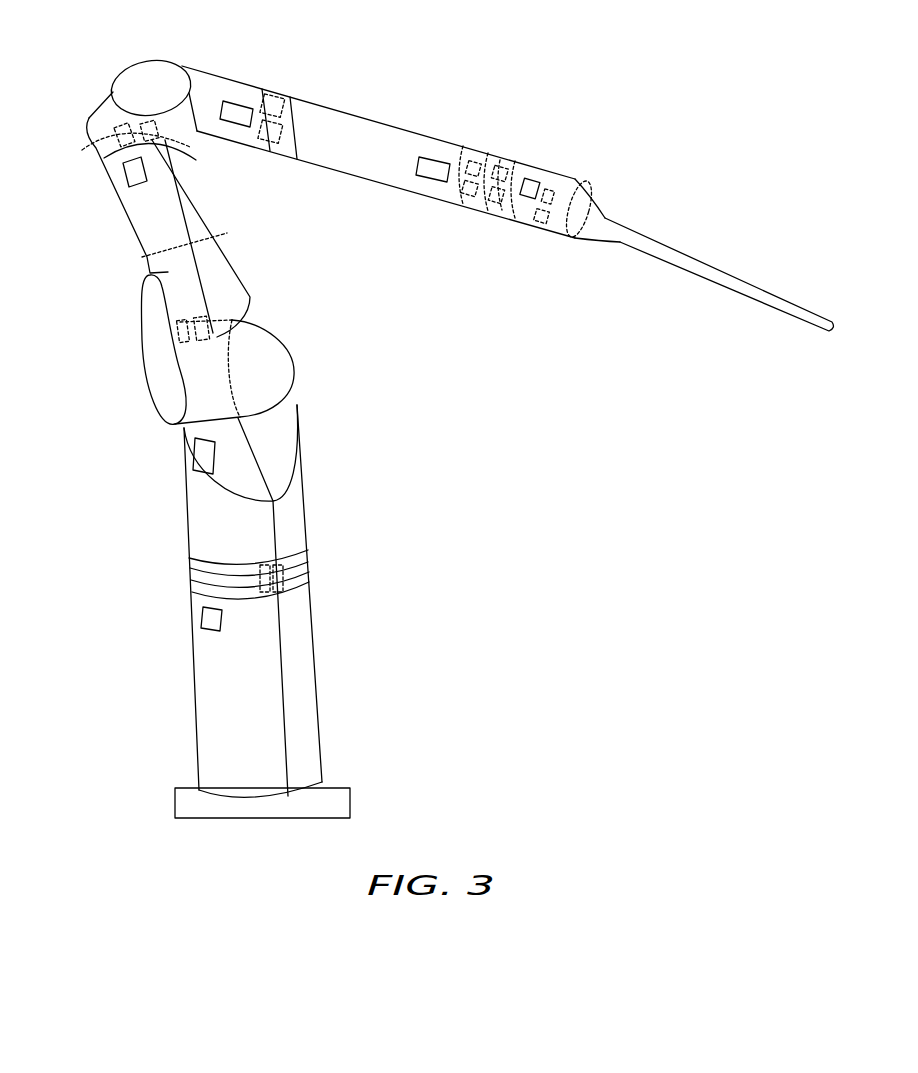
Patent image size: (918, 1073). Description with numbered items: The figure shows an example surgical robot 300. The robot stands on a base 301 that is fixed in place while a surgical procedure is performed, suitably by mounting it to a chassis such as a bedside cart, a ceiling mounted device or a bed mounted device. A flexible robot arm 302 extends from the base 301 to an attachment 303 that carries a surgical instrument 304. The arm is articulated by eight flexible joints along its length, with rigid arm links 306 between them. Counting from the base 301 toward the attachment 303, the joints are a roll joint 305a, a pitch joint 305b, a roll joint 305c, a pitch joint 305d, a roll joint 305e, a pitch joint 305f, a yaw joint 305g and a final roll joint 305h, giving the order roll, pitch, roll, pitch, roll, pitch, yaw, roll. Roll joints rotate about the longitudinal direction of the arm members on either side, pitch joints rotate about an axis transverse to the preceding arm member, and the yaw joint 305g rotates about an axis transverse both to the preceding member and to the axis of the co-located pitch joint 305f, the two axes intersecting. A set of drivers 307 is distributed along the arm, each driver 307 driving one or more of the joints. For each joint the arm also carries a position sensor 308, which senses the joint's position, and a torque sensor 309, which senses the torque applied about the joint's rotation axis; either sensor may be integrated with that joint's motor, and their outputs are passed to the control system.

The robot 300 is at (619, 460).
The base 301 is at (350, 793).
The robot arm 302 is at (106, 274).
The attachment 303 is at (597, 230).
The surgical instrument 304 is at (768, 300).
The roll joint 305a is at (190, 580).
The pitch joint 305b is at (156, 388).
The roll joint 305c is at (227, 233).
The pitch joint 305d is at (147, 76).
The roll joint 305e is at (303, 104).
The pitch joint 305f is at (473, 162).
The yaw joint 305g is at (513, 189).
The roll joint 305h is at (502, 210).
The arm link 306 is at (205, 708).
The driver 307 is at (240, 108).
The position sensor 308 is at (122, 137).
The torque sensor 309 is at (280, 108).